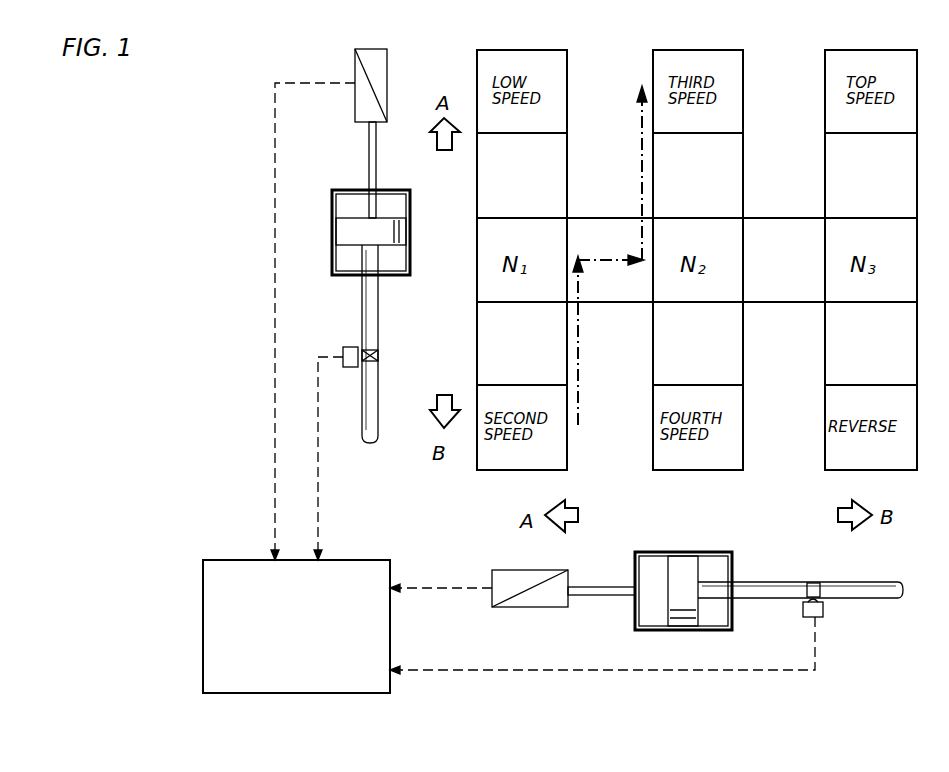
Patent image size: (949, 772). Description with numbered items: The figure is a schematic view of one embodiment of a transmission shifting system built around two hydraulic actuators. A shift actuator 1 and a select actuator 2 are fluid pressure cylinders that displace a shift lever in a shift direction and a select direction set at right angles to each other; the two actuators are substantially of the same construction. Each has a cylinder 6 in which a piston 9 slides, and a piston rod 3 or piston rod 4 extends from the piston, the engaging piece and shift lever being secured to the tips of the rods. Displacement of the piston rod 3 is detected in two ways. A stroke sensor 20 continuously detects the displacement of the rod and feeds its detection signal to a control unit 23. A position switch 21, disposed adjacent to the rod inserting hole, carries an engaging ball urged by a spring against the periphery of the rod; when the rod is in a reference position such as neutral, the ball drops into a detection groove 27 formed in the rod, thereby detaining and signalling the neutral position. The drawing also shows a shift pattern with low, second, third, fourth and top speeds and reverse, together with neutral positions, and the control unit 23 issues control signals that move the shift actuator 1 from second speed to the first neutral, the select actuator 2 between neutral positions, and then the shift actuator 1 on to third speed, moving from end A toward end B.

The shift actuator 1 is at (342, 180).
The select actuator 2 is at (800, 574).
The piston rod 3 is at (380, 305).
The piston rod 4 is at (768, 600).
The cylinder 6 is at (400, 203).
The piston 9 is at (402, 238).
The stroke sensor 20 is at (378, 62).
The position switch 21 is at (345, 349).
The control unit 23 is at (348, 572).
The detection groove 27 is at (380, 357).